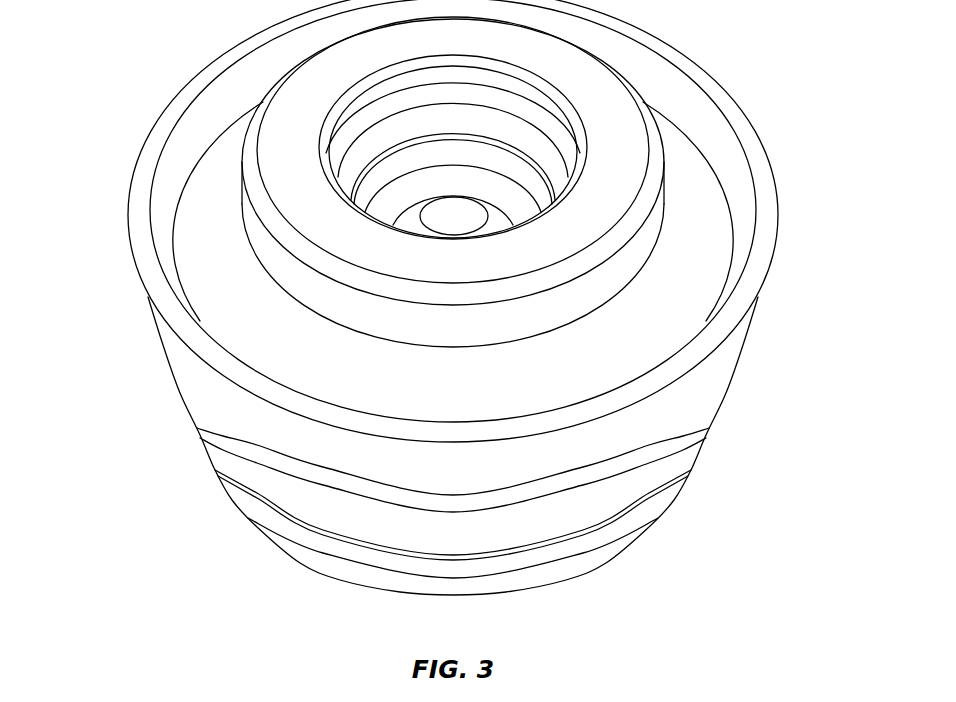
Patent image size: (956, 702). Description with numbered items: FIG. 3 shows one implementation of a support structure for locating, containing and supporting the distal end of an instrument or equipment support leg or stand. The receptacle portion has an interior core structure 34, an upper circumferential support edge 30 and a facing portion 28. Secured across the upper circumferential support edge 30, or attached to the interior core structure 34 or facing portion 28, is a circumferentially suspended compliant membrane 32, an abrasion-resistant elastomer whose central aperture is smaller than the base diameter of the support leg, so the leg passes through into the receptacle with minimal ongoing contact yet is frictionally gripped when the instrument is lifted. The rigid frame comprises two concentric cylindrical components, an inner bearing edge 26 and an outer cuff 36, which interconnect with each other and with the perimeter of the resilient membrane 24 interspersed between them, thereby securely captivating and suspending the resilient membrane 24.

The resilient membrane 24 is at (327, 334).
The inner bearing edge 26 is at (172, 244).
The facing portion 28 is at (457, 336).
The upper circumferential support edge 30 is at (541, 264).
The suspended compliant membrane 32 is at (296, 140).
The interior core structure 34 is at (394, 100).
The outer cuff 36 is at (566, 446).